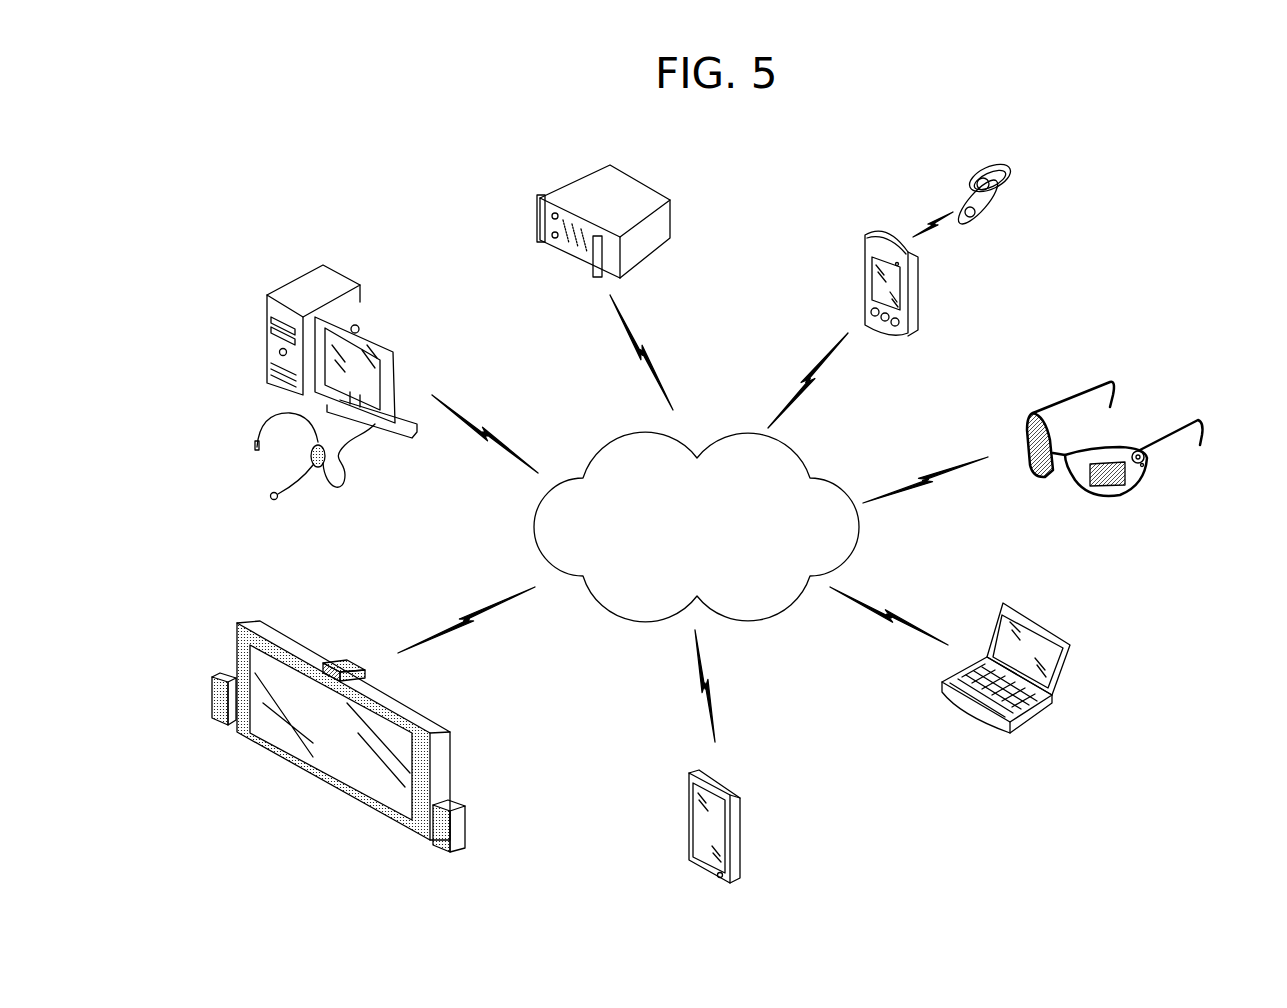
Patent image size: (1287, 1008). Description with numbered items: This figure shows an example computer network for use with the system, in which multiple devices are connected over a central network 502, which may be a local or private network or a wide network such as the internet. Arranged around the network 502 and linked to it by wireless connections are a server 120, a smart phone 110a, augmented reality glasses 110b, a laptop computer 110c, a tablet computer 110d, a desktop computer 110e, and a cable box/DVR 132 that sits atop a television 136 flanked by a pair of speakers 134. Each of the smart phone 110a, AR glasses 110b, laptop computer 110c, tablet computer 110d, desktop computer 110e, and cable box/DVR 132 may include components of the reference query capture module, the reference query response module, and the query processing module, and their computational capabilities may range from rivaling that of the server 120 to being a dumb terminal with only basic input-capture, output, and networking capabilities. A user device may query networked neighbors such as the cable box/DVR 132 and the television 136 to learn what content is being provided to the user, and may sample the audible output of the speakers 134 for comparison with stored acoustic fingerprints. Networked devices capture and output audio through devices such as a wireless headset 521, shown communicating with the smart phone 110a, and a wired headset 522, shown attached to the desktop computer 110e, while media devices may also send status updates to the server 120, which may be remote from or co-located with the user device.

The network 502 is at (696, 527).
The server 120 is at (577, 197).
The desktop computer 110e is at (259, 307).
The headset 522 is at (257, 438).
The television 136 is at (313, 770).
The cable box/digital video recorder (DVR) 132 is at (328, 662).
The speakers 134 is at (487, 797).
The smart phone 110a is at (922, 290).
The headset 521 is at (1005, 172).
The augmented reality (AR) glasses 110b is at (1110, 382).
The laptop computer 110c is at (1075, 643).
The tablet computer 110d is at (742, 812).